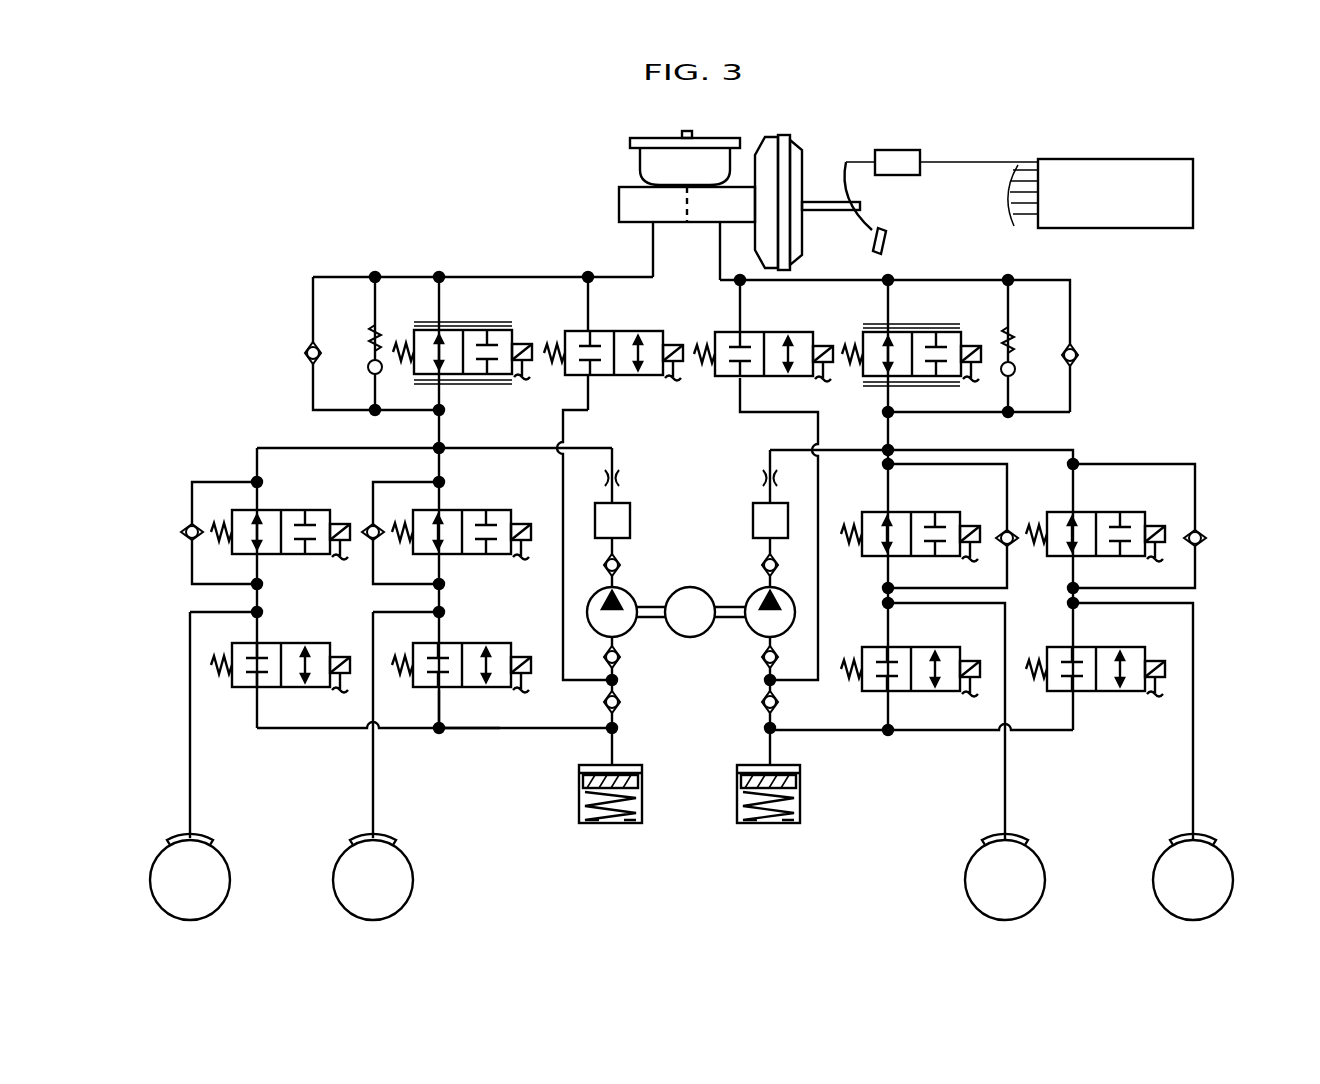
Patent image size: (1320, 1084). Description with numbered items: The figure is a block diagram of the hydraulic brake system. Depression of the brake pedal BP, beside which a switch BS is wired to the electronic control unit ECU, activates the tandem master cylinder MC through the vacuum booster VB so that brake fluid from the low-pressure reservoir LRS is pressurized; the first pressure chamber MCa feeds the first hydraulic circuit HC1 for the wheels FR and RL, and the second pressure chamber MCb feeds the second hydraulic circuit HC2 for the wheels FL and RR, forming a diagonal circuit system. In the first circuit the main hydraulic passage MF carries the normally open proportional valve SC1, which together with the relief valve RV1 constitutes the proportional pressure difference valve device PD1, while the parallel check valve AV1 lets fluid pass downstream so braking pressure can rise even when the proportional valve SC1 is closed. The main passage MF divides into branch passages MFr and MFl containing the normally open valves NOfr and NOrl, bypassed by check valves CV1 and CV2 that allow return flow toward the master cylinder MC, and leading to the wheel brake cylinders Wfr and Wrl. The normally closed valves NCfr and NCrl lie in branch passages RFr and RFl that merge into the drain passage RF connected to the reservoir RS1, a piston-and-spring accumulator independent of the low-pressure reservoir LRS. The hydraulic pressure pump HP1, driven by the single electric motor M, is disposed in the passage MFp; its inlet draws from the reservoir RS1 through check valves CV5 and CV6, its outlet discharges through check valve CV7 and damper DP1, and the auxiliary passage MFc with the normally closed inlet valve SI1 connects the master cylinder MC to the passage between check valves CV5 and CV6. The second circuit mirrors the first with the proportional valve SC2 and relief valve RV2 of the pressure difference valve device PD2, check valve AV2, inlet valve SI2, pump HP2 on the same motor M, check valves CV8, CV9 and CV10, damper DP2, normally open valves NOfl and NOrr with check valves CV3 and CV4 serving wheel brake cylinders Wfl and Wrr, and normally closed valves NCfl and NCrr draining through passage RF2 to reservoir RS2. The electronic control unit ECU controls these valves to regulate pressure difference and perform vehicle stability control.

The low-pressure reservoir LRS is at (648, 166).
The master cylinder MC is at (619, 205).
The first pressure chamber MCa is at (637, 224).
The second pressure chamber MCb is at (712, 224).
The vacuum booster VB is at (802, 243).
The brake pedal BP is at (866, 226).
The brake switch BS is at (942, 163).
The electronic control unit ECU is at (1100, 193).
The first hydraulic circuit HC1 is at (423, 268).
The second hydraulic circuit HC2 is at (949, 273).
The check valve AV1 is at (306, 360).
The check valve AV2 is at (1092, 356).
The relief valve RV1 is at (368, 363).
The relief valve RV2 is at (1016, 366).
The proportional valve SC1 is at (462, 333).
The proportional valve SC2 is at (908, 333).
The proportional pressure difference valve device PD1 is at (502, 390).
The proportional pressure difference valve device PD2 is at (855, 390).
The inlet valve SI1 is at (610, 333).
The inlet valve SI2 is at (763, 333).
The main hydraulic passage MF is at (439, 442).
The auxiliary hydraulic passage MFc is at (569, 445).
The passage MFp is at (614, 462).
The branch hydraulic passage MFr is at (258, 479).
The branch hydraulic passage MFl is at (440, 479).
The damper DP1 is at (620, 505).
The damper DP2 is at (753, 506).
The check valve CV1 is at (194, 526).
The check valve CV2 is at (375, 526).
The check valve CV3 is at (1005, 530).
The check valve CV4 is at (1194, 530).
The check valve CV5 is at (620, 695).
The check valve CV6 is at (620, 650).
The check valve CV7 is at (620, 568).
The check valve CV8 is at (762, 695).
The check valve CV9 is at (762, 650).
The check valve CV10 is at (760, 562).
The hydraulic pressure pump HP1 is at (620, 597).
The hydraulic pressure pump HP2 is at (752, 594).
The electric motor M is at (690, 612).
The reservoir RS1 is at (579, 786).
The reservoir RS2 is at (800, 790).
The normally open valve NOfr is at (285, 510).
The normally open valve NOrl is at (473, 500).
The normally open valve NOfl is at (910, 512).
The normally open valve NOrr is at (1095, 512).
The normally closed valve NCfr is at (285, 643).
The normally closed valve NCrl is at (466, 643).
The normally closed valve NCfl is at (910, 647).
The normally closed valve NCrr is at (1095, 647).
The branch passage RFr is at (297, 729).
The branch passage RFl is at (440, 716).
The drain passage RF is at (473, 729).
The return fluid passage RF2 is at (921, 727).
The wheel brake cylinder Wfr is at (172, 841).
The wheel brake cylinder Wrl is at (355, 841).
The wheel cylinder front left Wfl is at (1022, 846).
The wheel cylinder rear right Wrr is at (1212, 846).
The wheel FR is at (190, 877).
The wheel RL is at (373, 877).
The wheel FL is at (1005, 877).
The wheel RR is at (1193, 877).